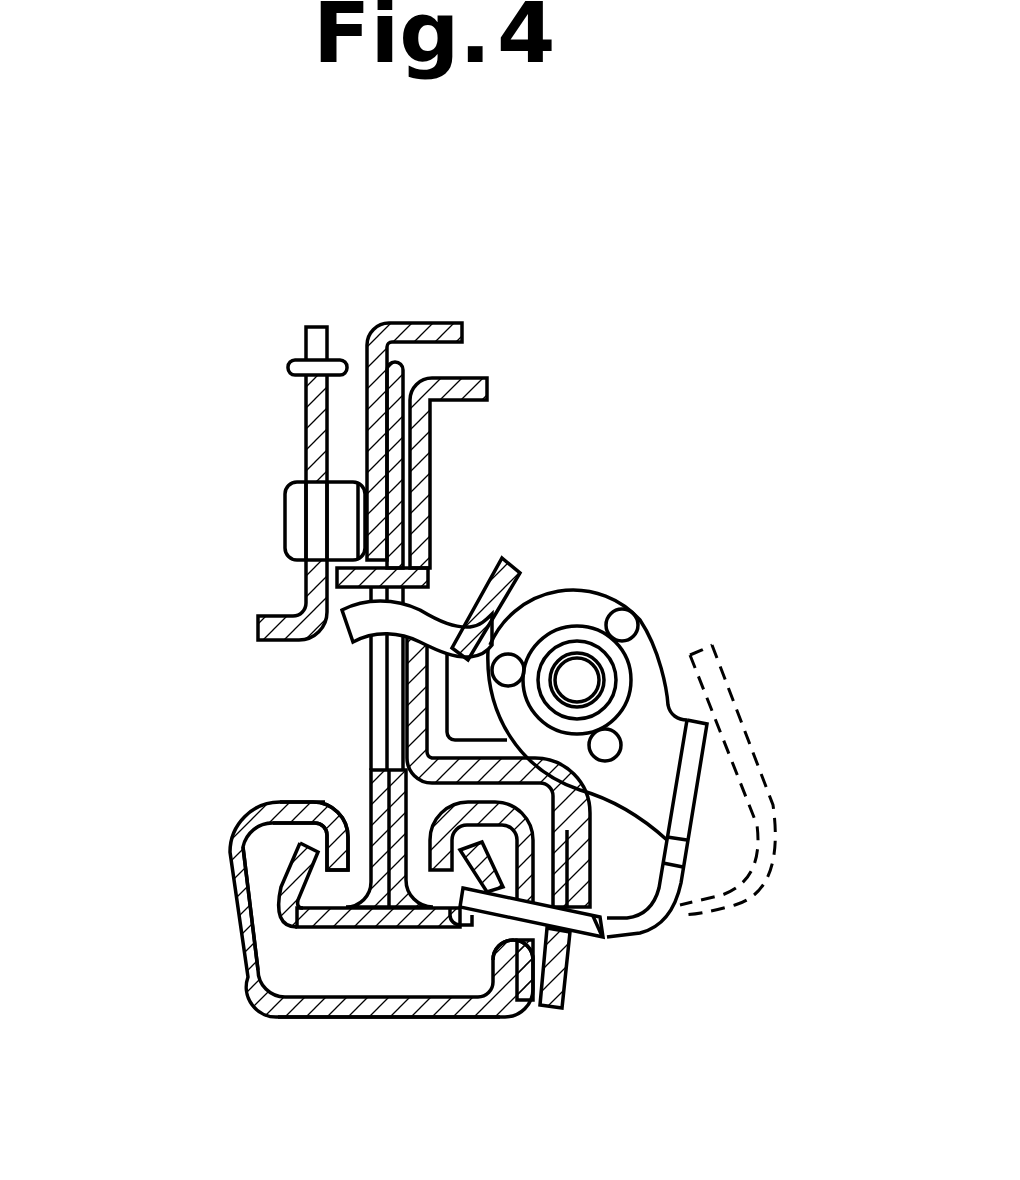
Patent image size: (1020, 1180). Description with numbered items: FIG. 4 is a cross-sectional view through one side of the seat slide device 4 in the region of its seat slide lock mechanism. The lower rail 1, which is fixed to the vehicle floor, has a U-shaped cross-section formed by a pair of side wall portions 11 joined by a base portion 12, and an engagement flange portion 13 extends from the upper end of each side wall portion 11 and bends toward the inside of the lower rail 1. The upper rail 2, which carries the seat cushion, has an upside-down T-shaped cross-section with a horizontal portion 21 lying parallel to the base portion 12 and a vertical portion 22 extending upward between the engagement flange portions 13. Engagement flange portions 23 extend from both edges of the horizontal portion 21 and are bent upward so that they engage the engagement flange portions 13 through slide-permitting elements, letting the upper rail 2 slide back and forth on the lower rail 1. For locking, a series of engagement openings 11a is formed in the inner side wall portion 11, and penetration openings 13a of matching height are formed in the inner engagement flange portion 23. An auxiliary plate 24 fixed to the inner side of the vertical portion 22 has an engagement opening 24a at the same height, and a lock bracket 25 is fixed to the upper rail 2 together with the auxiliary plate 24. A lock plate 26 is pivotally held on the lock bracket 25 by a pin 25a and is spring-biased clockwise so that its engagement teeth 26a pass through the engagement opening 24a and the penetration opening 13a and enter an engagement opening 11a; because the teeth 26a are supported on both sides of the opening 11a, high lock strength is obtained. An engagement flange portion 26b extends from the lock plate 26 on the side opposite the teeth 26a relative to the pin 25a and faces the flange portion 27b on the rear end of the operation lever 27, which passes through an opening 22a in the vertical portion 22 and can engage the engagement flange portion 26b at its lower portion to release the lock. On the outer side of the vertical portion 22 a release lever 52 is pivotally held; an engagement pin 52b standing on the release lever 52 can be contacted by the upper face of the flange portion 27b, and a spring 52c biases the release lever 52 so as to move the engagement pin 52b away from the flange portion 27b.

The lower rail 1 is at (237, 979).
The upper rail 2 is at (420, 318).
The seat slide device 4 is at (220, 755).
The side wall portion 11 is at (243, 905).
The engagement opening 11a is at (520, 980).
The base portion 12 is at (322, 1008).
The engagement flange portion 13 is at (300, 805).
The penetration opening 13a is at (483, 907).
The horizontal portion 21 is at (325, 923).
The vertical portion 22 is at (400, 470).
The opening 22a is at (397, 762).
The engagement flange portion 23 is at (302, 858).
The auxiliary plate 24 is at (610, 770).
The engagement opening 24a is at (580, 947).
The lock bracket 25 is at (466, 660).
The pin 25a is at (578, 670).
The lock plate 26 is at (650, 665).
The engagement teeth 26a is at (480, 903).
The engagement flange portion 26b is at (343, 620).
The operation lever 27 is at (428, 430).
The flange portion 27b is at (340, 578).
The release lever 52 is at (302, 437).
The engagement pin 52b is at (340, 510).
The spring 52c is at (307, 362).